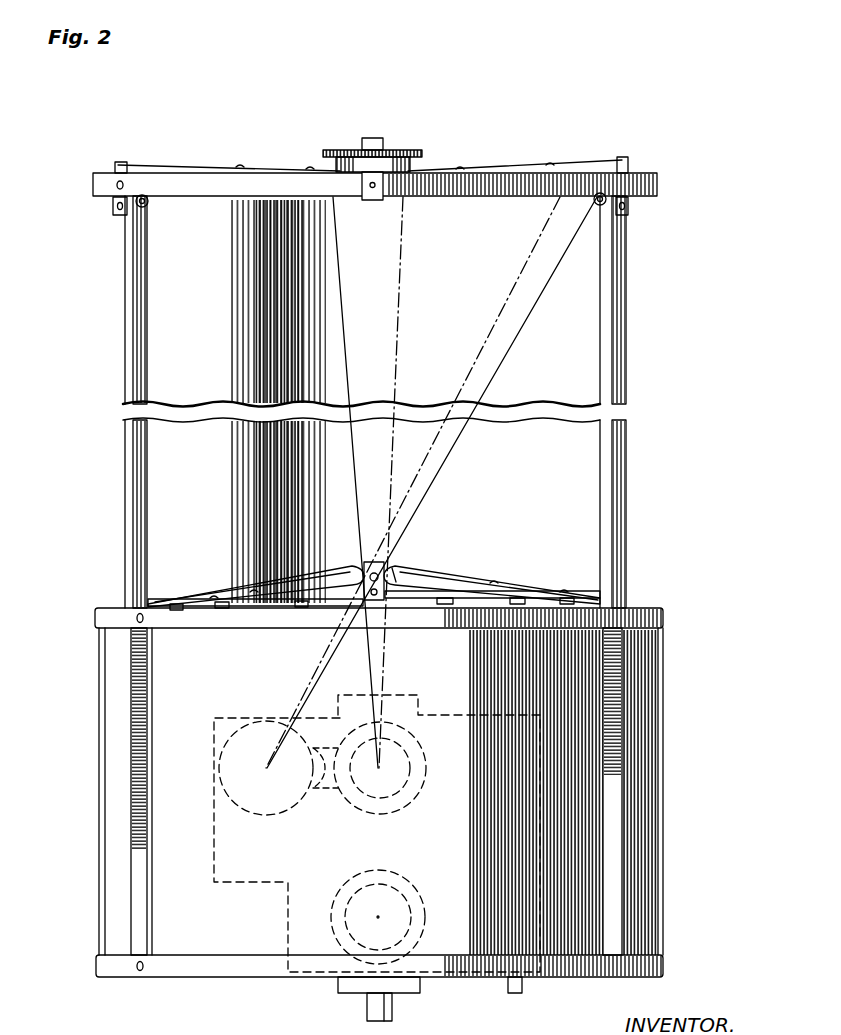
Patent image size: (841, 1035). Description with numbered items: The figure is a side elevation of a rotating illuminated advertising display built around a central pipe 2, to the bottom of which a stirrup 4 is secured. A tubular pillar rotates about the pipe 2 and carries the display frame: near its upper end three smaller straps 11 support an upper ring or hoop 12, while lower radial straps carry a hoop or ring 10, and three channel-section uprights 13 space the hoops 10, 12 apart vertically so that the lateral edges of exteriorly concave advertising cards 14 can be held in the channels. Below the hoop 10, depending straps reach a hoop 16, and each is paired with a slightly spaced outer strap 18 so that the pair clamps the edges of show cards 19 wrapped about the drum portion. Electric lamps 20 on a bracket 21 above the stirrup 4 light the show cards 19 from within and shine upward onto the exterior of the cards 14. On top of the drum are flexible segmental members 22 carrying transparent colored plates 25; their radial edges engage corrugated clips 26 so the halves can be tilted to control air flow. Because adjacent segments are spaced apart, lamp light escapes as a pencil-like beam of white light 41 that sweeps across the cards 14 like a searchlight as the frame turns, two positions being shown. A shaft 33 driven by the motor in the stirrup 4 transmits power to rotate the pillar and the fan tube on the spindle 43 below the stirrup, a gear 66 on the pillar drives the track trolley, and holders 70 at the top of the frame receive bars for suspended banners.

The pipe 2 is at (375, 138).
The gear 66 is at (422, 153).
The holders 70 is at (160, 165).
The ring or hoop 12 is at (96, 182).
The smaller straps 11 is at (113, 207).
The uprights 13 is at (624, 298).
The advertising cards 14 is at (396, 401).
The pencil like beam of white light 41 is at (398, 330).
The hoop or ring 10 is at (110, 608).
The segmental members 22 is at (505, 592).
The transparent colored plates 25 is at (410, 582).
The clips 26 is at (366, 568).
The outer strap 18 is at (99, 750).
The show cards 19 is at (423, 792).
The hoop 16 is at (222, 977).
The stirrup 4 is at (214, 838).
The electric lamps 20 is at (266, 721).
The bracket 21 is at (410, 696).
The spindle 43 is at (367, 1010).
The shaft 33 is at (518, 993).